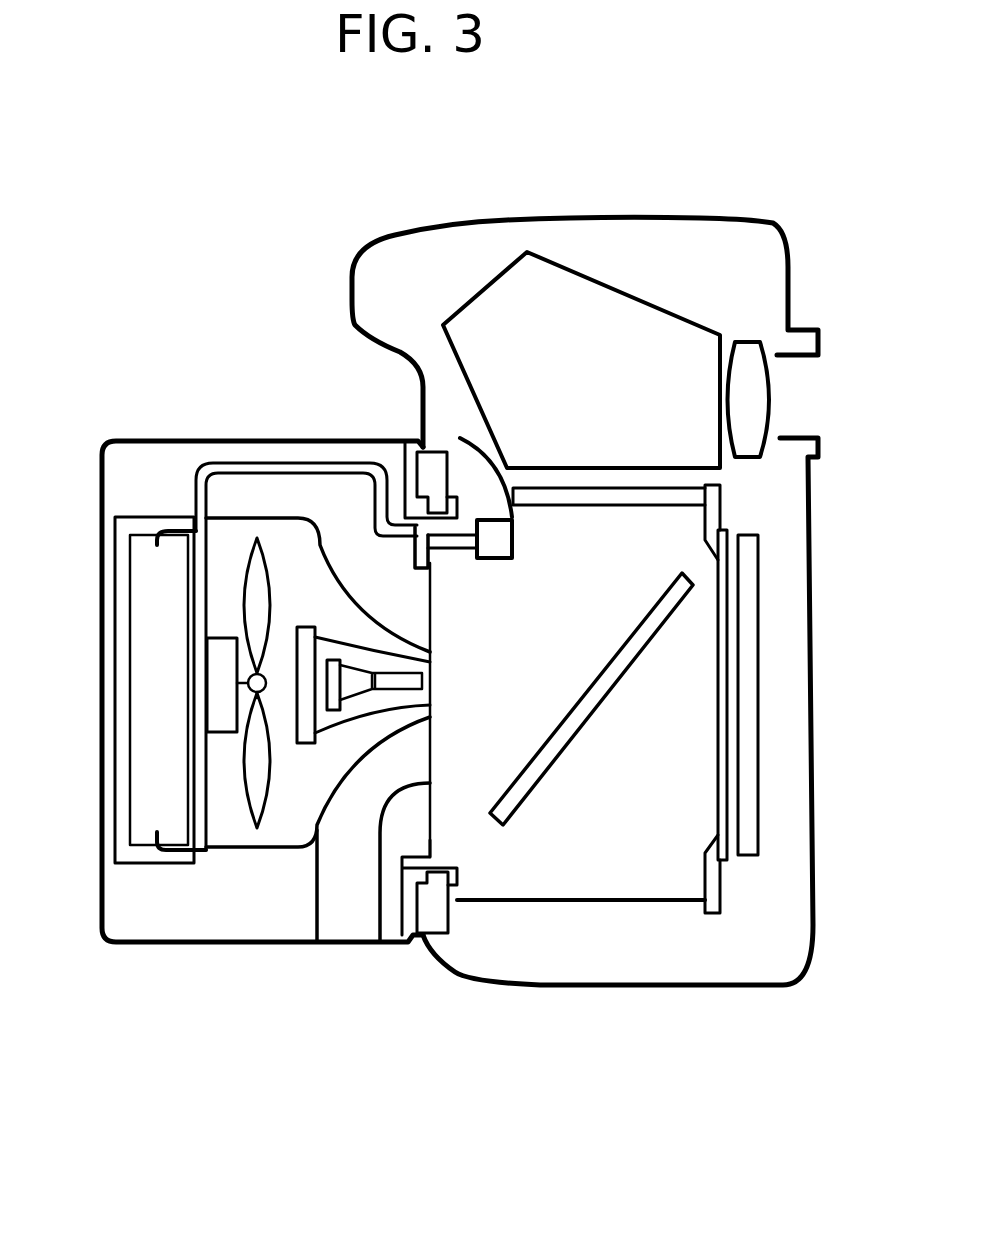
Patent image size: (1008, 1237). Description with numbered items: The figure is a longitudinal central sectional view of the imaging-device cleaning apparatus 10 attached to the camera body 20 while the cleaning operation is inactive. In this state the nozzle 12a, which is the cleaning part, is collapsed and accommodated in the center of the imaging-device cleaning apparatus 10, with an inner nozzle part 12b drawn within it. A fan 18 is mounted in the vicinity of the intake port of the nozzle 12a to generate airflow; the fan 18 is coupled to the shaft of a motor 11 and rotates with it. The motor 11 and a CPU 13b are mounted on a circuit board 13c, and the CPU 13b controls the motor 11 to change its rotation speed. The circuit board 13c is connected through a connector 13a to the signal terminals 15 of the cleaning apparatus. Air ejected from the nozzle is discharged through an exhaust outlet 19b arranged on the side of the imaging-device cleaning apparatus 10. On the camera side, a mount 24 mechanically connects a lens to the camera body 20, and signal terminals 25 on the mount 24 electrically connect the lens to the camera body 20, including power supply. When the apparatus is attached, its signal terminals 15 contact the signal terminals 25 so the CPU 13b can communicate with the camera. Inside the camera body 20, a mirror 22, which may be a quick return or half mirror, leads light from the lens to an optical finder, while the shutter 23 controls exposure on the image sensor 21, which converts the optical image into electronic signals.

The imaging-device cleaning apparatus 10 is at (142, 438).
The motor 11 is at (207, 707).
The nozzle 12a is at (365, 715).
The inner air outlet nozzle 12b is at (430, 686).
The connector 13a is at (253, 462).
The CPU 13b is at (140, 830).
The circuit board 13c is at (203, 860).
The signal terminals 15 is at (413, 538).
The fan 18 is at (260, 828).
The exhaust outlet 19b is at (348, 917).
The camera body 20 is at (813, 617).
The image sensor 21 is at (762, 757).
The mirror 22 is at (612, 660).
The shutter 23 is at (721, 748).
The mount 24 is at (423, 472).
The signal terminals 25 is at (453, 547).